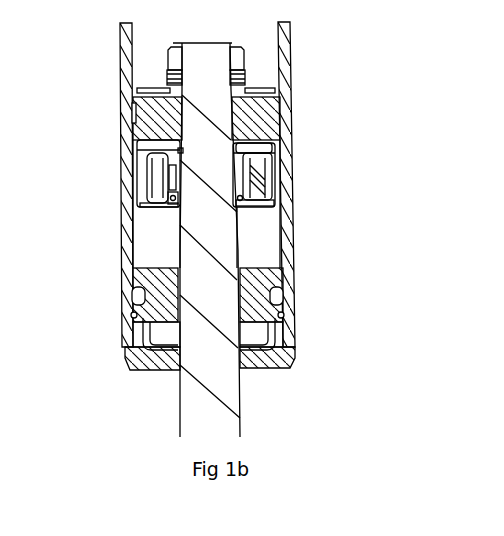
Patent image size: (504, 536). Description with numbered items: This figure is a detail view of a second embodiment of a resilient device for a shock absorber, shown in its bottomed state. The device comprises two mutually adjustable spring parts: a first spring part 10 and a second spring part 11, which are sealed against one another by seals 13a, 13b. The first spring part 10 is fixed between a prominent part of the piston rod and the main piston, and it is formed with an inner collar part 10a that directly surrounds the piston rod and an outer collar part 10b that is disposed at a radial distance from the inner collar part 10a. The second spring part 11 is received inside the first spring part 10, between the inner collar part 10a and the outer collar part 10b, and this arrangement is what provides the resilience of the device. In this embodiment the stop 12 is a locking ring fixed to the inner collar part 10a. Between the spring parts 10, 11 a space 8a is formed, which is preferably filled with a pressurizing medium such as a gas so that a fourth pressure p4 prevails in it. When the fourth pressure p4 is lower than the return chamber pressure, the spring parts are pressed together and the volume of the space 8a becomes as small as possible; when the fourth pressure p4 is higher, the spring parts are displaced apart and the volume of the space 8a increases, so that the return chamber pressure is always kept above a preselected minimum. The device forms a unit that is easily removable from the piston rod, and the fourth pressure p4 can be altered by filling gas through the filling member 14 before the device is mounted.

The first spring part 10 is at (137, 138).
The outer collar part 10b is at (138, 162).
The space 8a is at (145, 169).
The inner collar part 10a is at (168, 178).
The second spring part 11 is at (155, 208).
The stop 12 is at (168, 206).
The fourth pressure p4 is at (268, 153).
The seal 13a is at (270, 167).
The seal 13b is at (250, 170).
The filling member 14 is at (267, 192).